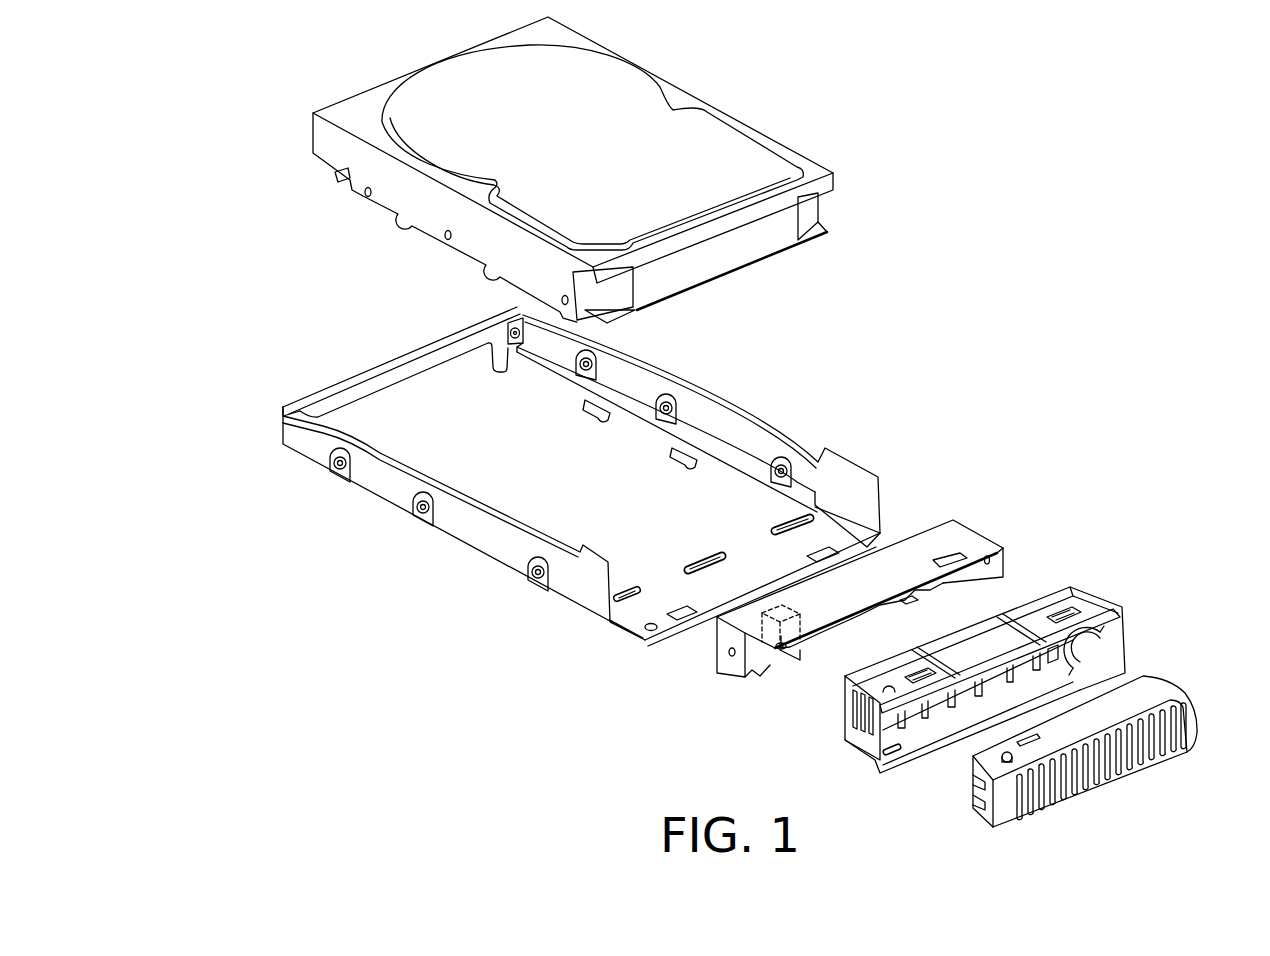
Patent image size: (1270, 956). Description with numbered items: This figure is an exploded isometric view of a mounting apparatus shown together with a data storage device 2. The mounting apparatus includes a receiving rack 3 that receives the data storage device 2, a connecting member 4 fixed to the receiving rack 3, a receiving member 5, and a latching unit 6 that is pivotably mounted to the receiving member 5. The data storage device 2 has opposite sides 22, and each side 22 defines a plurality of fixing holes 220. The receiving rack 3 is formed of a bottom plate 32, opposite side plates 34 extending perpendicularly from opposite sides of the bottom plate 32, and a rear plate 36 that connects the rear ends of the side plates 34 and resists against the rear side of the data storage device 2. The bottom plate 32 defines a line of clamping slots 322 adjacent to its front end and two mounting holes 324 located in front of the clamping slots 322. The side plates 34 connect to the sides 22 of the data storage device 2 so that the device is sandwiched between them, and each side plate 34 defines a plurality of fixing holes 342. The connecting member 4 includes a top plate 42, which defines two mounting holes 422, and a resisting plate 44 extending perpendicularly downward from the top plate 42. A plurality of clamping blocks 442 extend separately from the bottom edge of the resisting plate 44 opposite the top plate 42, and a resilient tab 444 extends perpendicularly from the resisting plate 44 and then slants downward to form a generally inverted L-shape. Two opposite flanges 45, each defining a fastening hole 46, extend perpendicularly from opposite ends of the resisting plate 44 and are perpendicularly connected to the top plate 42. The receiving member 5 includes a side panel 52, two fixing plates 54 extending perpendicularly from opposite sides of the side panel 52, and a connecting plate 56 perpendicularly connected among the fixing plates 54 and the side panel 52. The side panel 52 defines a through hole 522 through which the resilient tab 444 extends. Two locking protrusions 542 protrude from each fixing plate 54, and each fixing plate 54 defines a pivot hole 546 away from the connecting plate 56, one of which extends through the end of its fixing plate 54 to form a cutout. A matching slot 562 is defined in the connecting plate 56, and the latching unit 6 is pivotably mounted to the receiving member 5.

The data storage device 2 is at (532, 170).
The side 22 is at (328, 145).
The fixing hole 220 is at (446, 240).
The receiving rack 3 is at (587, 476).
The bottom plate 32 is at (686, 520).
The side plate 34 is at (712, 422).
The rear plate 36 is at (432, 382).
The clamping slot 322 is at (797, 518).
The mounting hole 324 is at (838, 553).
The fixing hole 342 is at (335, 470).
The connecting member 4 is at (888, 591).
The top plate 42 is at (865, 553).
The mounting hole 422 is at (942, 567).
The resisting plate 44 is at (958, 571).
The clamping block 442 is at (925, 605).
The resilient tab 444 is at (800, 656).
The flange 45 is at (707, 666).
The fastening hole 46 is at (738, 648).
The receiving member 5 is at (987, 678).
The side panel 52 is at (921, 731).
The through hole 522 is at (885, 752).
The fixing plate 54 is at (890, 714).
The locking protrusion 542 is at (1068, 607).
The pivot hole 546 is at (890, 692).
The connecting plate 56 is at (1130, 648).
The matching slot 562 is at (1062, 648).
The latching unit 6 is at (1166, 703).